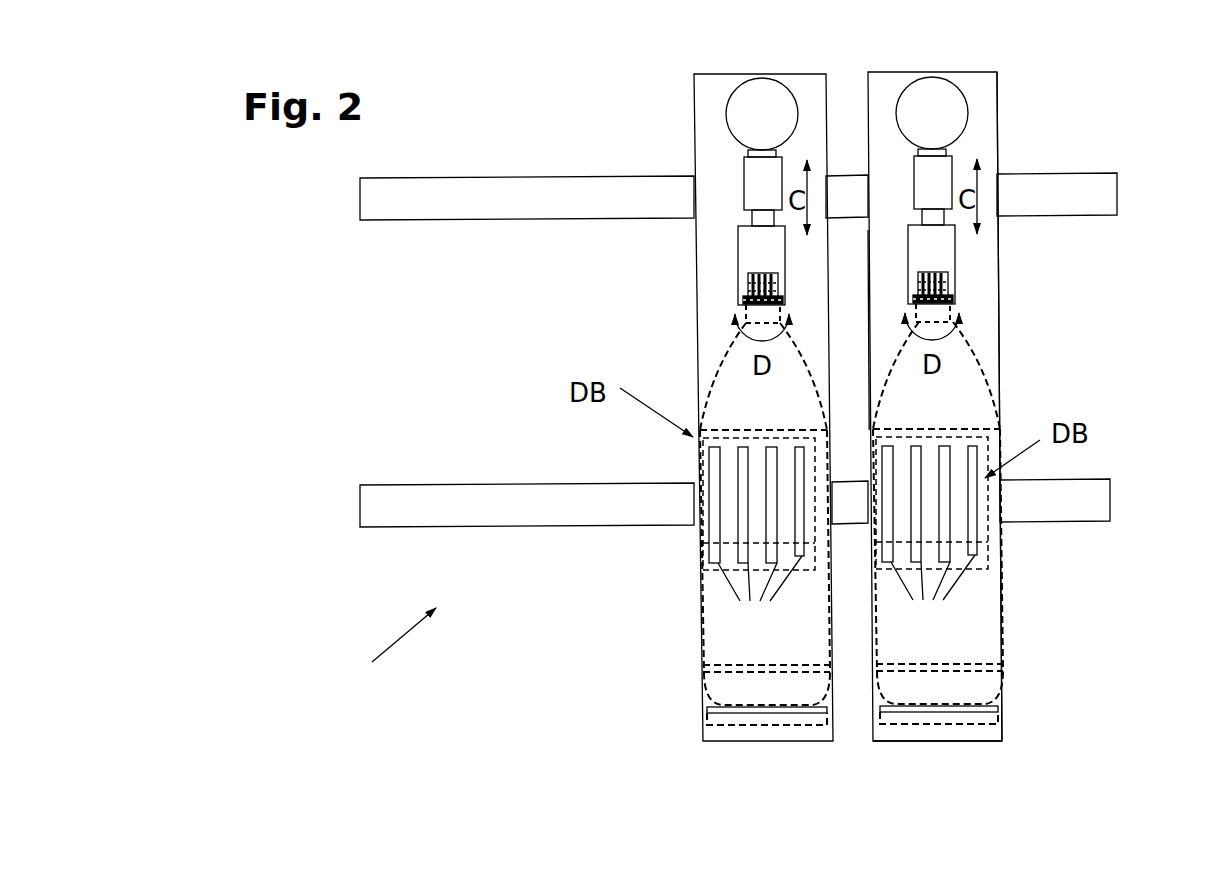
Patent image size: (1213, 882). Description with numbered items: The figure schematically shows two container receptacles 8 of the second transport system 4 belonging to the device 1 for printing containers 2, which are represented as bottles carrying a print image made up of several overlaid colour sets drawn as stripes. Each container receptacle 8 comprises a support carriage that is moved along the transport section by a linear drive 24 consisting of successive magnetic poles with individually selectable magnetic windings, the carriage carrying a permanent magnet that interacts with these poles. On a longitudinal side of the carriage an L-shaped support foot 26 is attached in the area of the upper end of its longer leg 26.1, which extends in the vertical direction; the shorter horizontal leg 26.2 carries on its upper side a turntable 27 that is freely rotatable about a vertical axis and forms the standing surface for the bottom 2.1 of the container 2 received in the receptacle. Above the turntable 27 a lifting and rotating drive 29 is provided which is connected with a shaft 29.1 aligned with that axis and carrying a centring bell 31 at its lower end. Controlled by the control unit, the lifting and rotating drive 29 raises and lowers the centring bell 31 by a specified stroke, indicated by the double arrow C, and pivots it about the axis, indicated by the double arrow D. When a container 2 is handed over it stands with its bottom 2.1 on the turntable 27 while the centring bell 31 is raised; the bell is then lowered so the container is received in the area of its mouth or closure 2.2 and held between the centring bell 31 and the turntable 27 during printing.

The device 1 is at (390, 655).
The container 2 is at (694, 625).
The container bottom 2.1 is at (752, 702).
The container closure 2.2 is at (752, 303).
The second transport system 4 is at (528, 168).
The container receptacle 8 is at (668, 110).
The linear drive 24 is at (1090, 185).
The support foot 26 is at (1005, 283).
The longer leg 26.1 is at (985, 328).
The shorter horizontal leg 26.2 is at (1012, 729).
The turntable 27 is at (783, 713).
The lifting and rotating drive 29 is at (775, 90).
The shaft 29.1 is at (752, 224).
The centring bell 31 is at (745, 255).